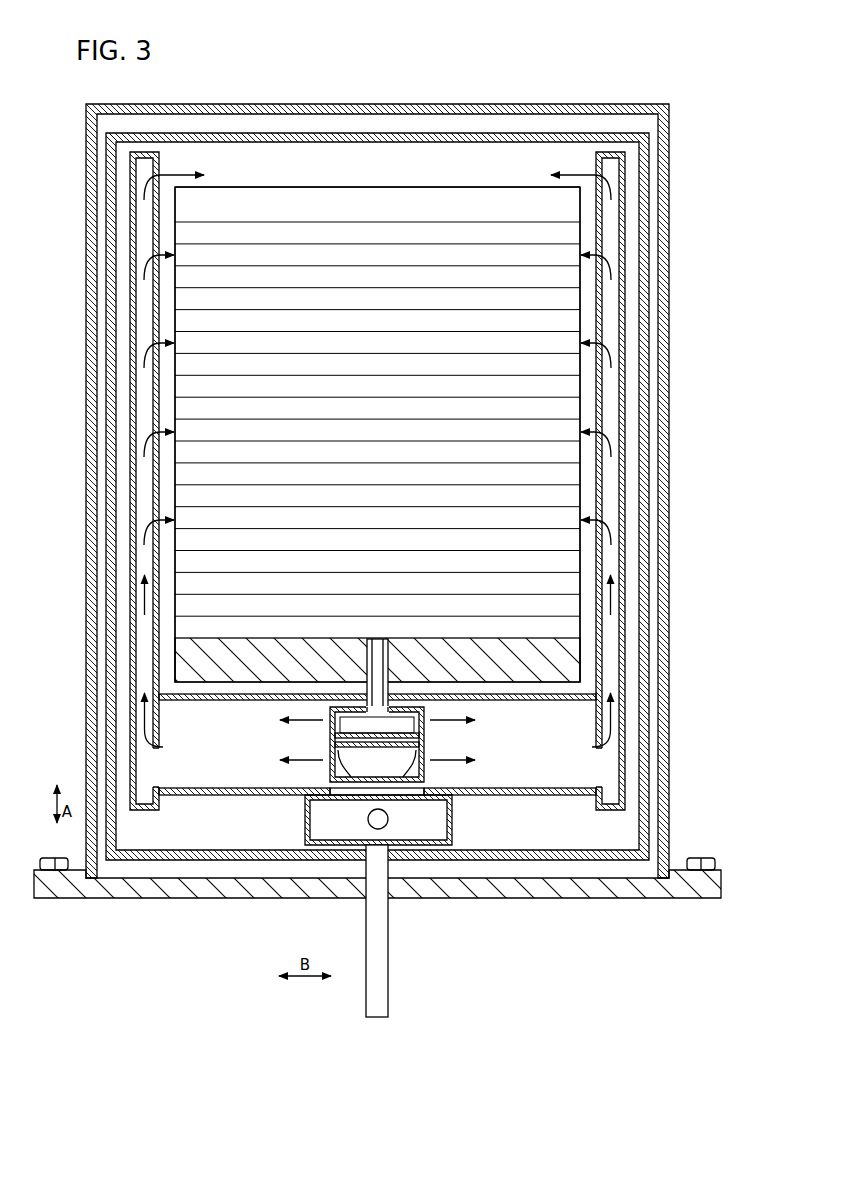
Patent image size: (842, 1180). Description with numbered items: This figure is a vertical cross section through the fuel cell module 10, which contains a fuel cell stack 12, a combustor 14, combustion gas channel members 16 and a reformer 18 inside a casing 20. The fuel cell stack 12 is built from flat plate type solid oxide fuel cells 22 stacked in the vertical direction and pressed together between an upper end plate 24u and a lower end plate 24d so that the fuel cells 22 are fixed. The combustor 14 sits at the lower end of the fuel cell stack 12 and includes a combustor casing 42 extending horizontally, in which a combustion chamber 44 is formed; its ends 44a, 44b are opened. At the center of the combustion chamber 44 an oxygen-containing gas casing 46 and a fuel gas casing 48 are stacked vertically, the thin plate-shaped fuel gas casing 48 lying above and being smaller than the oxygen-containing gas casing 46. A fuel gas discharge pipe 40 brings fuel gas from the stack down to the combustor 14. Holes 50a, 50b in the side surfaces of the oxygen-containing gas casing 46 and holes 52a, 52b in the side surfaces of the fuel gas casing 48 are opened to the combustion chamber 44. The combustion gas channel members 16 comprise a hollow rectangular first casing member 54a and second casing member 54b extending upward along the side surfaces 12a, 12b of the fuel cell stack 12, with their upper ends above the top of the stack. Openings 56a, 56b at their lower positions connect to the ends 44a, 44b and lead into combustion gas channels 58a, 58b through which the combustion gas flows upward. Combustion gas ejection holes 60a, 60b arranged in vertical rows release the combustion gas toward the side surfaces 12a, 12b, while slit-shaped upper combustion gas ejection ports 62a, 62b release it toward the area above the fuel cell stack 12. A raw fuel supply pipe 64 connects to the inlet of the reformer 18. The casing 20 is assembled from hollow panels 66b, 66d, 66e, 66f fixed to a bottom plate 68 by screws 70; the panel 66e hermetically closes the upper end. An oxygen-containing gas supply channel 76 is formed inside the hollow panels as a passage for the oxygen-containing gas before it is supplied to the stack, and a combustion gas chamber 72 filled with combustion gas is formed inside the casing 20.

The fuel cell module 10 is at (638, 58).
The fuel cell stack 12 is at (379, 404).
The one side surface of the fuel cell stack 12a is at (174, 302).
The other side surface of the fuel cell stack 12b is at (581, 395).
The combustor 14 is at (252, 800).
The combustion gas channel members 16 is at (122, 392).
The reformer 18 is at (432, 848).
The casing 20 is at (557, 103).
The fuel cells 22 is at (523, 563).
The upper end plate 24u is at (312, 195).
The lower end plate 24d is at (237, 677).
The fuel gas discharge pipe 40 is at (388, 665).
The combustor casing 42 is at (195, 797).
The combustion chamber 44 is at (548, 790).
The one end of the combustion chamber 44a is at (157, 758).
The other end of the combustion chamber 44b is at (600, 742).
The oxygen-containing gas casing 46 is at (330, 775).
The fuel gas casing 48 is at (424, 714).
The holes 50a is at (348, 755).
The holes 50b is at (408, 755).
The holes 52a is at (330, 722).
The holes 52b is at (424, 725).
The first casing member 54a is at (127, 466).
The second casing member 54b is at (628, 466).
The opening 56a is at (157, 702).
The opening 56b is at (600, 788).
The combustion gas channel 58a is at (147, 667).
The combustion gas channel 58b is at (612, 667).
The combustion gas ejection holes 60a is at (130, 258).
The combustion gas ejection holes 60b is at (625, 258).
The upper combustion gas ejection port 62a is at (143, 172).
The upper combustion gas ejection port 62b is at (605, 172).
The raw fuel supply pipe 64 is at (381, 995).
The panel 66b is at (648, 488).
The panel 66d is at (104, 522).
The panel 66e is at (421, 106).
The panel 66f is at (76, 892).
The bottom plate 68 is at (683, 893).
The screws 70 is at (694, 857).
The combustion gas chamber 72 is at (490, 157).
The oxygen-containing gas supply channel 76 is at (235, 125).